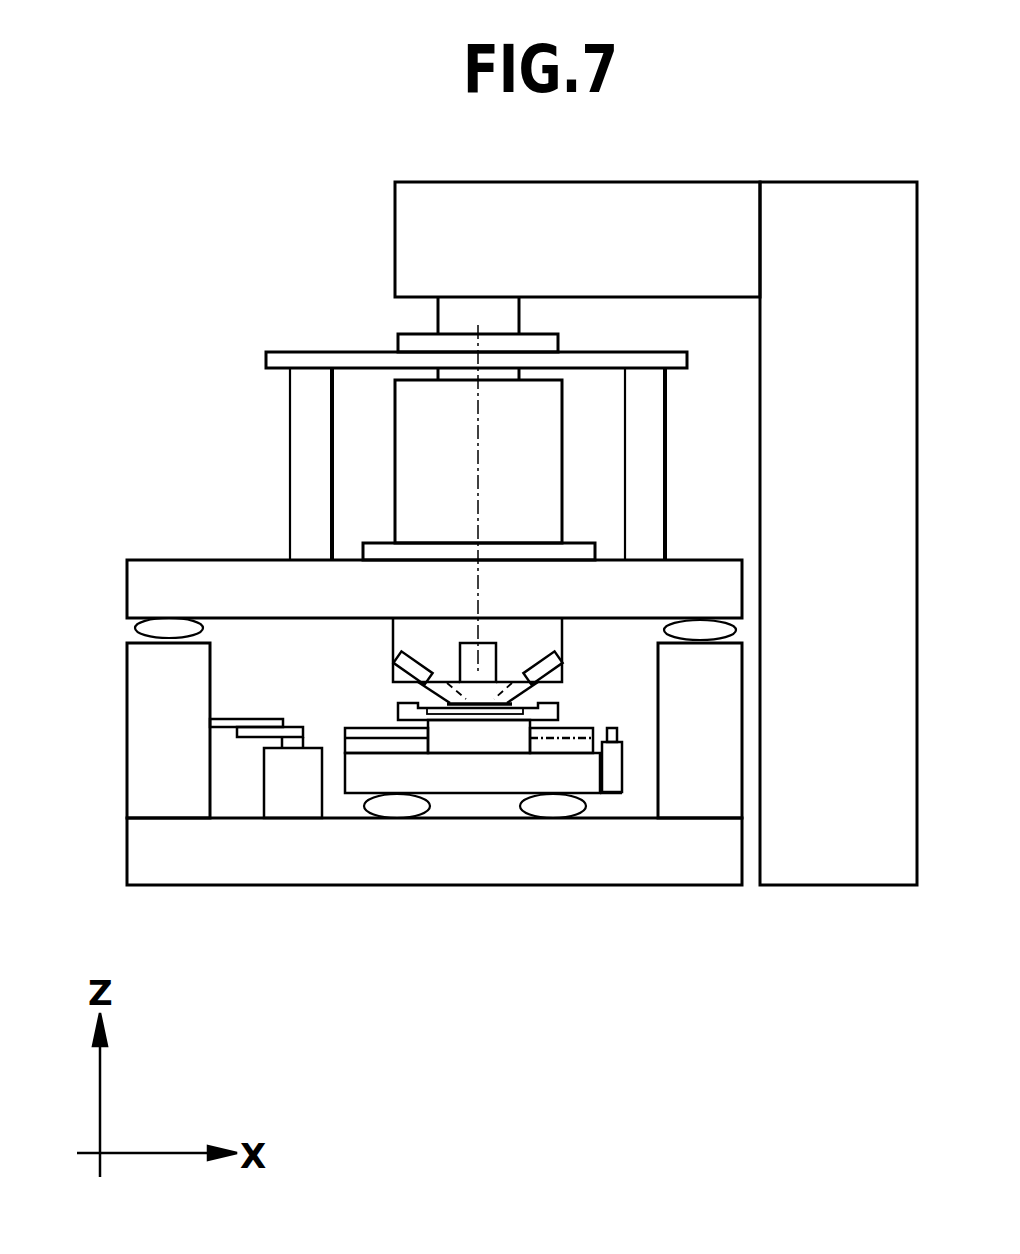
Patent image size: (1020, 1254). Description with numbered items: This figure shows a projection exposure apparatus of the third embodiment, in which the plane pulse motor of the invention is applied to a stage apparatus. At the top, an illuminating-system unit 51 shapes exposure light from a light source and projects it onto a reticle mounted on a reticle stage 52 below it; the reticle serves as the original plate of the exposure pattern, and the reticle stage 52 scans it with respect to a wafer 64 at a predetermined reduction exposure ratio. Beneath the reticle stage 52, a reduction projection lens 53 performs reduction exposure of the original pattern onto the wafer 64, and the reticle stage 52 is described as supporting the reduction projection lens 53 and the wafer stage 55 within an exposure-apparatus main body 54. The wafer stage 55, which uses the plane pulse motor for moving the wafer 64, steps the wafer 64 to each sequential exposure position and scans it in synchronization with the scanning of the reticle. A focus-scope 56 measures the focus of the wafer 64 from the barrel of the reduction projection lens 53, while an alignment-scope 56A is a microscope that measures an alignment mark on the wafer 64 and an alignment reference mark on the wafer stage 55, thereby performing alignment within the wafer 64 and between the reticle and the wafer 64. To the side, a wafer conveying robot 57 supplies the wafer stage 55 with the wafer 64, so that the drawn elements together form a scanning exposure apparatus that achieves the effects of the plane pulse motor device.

The illuminating-system unit 51 is at (413, 231).
The reticle stage 52 is at (408, 344).
The reduction projection lens 53 is at (410, 423).
The exposure-apparatus main body 54 is at (207, 580).
The wafer stage 55 is at (487, 797).
The focus-scope 56 is at (396, 672).
The alignment-scope 56A is at (478, 673).
The wafer conveying robot 57 is at (227, 727).
The wafer 64 is at (517, 707).